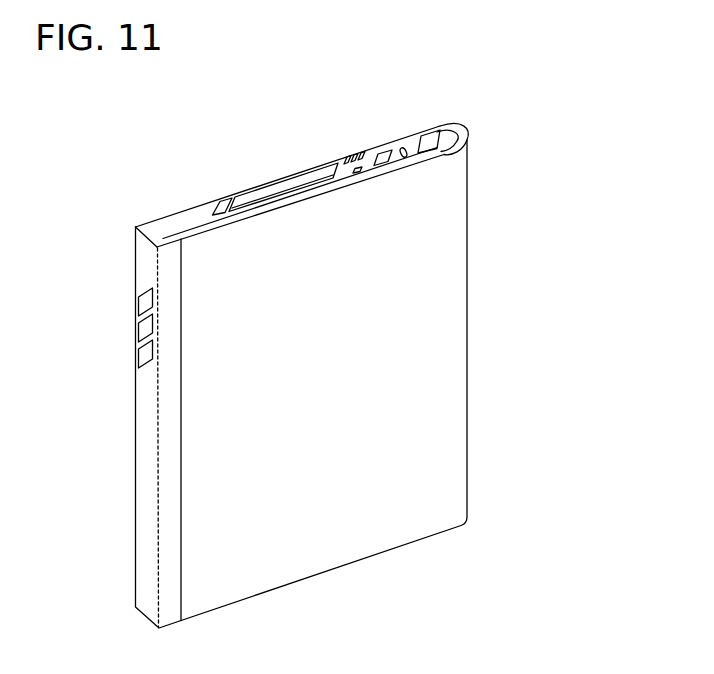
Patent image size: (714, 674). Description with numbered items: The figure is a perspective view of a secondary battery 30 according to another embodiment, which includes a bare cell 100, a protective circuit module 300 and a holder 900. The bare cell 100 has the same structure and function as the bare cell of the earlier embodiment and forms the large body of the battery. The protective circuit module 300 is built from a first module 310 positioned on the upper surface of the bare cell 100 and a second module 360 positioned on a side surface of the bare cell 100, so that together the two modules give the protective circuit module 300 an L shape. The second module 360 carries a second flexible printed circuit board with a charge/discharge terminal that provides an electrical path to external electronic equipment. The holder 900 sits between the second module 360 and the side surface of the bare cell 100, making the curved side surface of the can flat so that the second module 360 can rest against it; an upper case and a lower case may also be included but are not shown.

The secondary battery 30 is at (227, 130).
The bare cell 100 is at (477, 207).
The protective circuit module 300 is at (128, 148).
The first module 310 is at (178, 210).
The second module 360 is at (137, 258).
The holder 900 is at (147, 488).